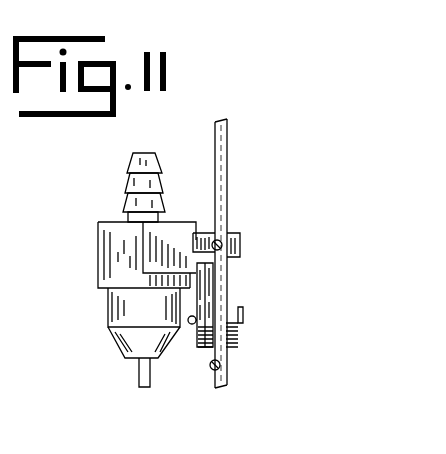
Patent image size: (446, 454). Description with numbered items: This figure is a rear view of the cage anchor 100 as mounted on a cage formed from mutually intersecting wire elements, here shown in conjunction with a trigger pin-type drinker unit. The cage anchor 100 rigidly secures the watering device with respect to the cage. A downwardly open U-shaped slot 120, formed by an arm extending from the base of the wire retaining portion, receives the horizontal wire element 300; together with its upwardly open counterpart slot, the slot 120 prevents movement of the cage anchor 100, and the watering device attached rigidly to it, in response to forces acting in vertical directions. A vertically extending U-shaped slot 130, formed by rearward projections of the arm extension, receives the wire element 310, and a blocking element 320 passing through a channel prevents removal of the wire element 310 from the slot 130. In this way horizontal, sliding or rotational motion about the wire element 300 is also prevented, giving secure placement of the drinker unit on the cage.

The cage anchor 100 is at (239, 215).
The U-shaped slot 120 is at (222, 243).
The wire element 300 is at (240, 254).
The U-shaped slot 130 is at (210, 288).
The blocking element 320 is at (243, 313).
The wire element 310 is at (221, 365).